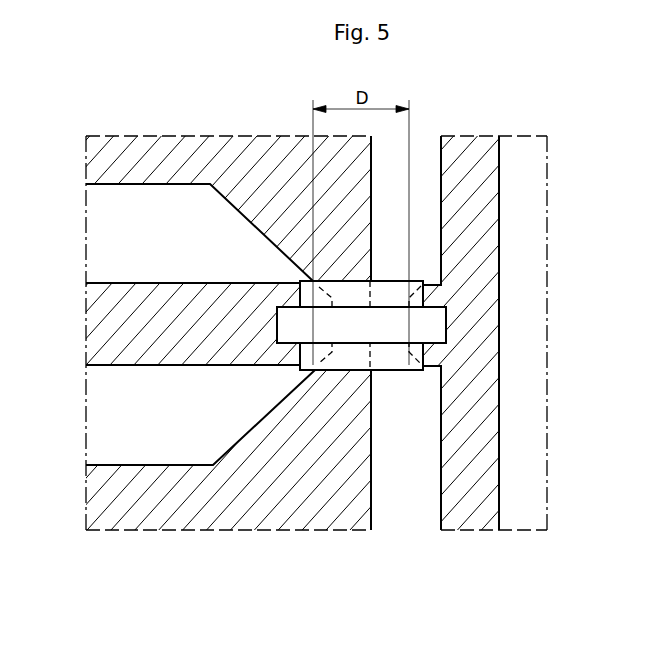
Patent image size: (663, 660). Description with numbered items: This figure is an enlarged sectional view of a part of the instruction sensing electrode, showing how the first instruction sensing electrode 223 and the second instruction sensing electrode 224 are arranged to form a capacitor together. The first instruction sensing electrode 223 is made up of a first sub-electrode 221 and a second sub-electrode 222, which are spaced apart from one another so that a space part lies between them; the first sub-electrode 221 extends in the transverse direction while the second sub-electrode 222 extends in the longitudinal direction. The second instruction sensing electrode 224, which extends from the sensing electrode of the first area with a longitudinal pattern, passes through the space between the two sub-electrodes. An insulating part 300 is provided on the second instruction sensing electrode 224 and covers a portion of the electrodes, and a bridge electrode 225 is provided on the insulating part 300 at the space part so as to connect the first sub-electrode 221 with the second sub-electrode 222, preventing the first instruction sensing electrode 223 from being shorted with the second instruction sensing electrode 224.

The first sub-electrode 221 is at (223, 362).
The second sub-electrode 222 is at (467, 517).
The first instruction sensing electrode 223 is at (215, 598).
The second instruction sensing electrode 224 is at (257, 173).
The bridge electrode 225 is at (441, 323).
The insulating part 300 is at (355, 295).